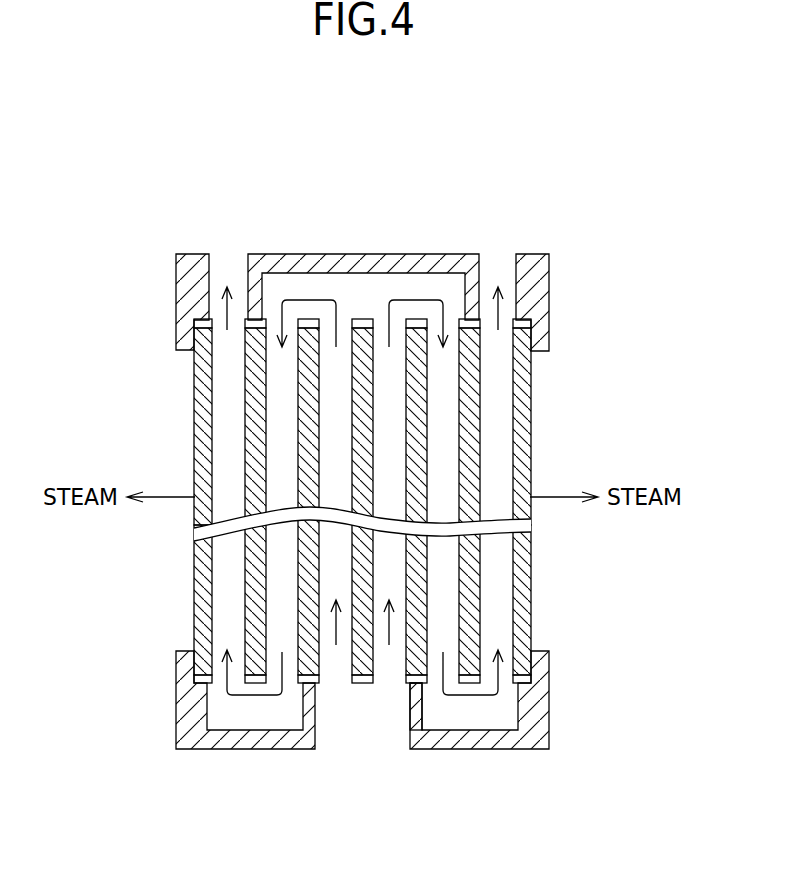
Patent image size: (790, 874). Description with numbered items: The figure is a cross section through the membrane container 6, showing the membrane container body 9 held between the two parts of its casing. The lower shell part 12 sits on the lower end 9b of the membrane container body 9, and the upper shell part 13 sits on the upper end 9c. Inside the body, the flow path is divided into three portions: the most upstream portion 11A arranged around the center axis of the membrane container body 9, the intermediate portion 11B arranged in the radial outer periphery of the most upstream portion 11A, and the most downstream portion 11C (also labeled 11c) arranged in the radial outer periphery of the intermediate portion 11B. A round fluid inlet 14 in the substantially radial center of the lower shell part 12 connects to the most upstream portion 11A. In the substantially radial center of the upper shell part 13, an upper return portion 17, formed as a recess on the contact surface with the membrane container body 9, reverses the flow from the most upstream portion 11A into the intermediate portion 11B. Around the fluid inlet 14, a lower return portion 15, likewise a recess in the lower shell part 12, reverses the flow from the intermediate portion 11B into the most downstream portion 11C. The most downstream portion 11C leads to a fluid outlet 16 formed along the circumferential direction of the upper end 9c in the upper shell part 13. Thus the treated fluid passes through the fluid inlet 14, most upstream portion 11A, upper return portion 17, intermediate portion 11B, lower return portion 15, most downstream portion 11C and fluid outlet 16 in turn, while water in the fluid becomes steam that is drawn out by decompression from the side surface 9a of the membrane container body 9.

The membrane container 6 is at (142, 266).
The membrane container body 9 is at (547, 460).
The side surface 9a is at (531, 578).
The lower end 9b is at (527, 681).
The upper end 9c is at (521, 320).
The most upstream portion 11A is at (402, 663).
The intermediate portion 11B is at (270, 392).
The most downstream portion 11C is at (515, 352).
The most downstream portion 11c is at (193, 363).
The lower shell part 12 is at (546, 723).
The upper shell part 13 is at (540, 267).
The fluid inlet 14 is at (407, 733).
The lower return portion 15 is at (258, 730).
The fluid outlet 16 is at (243, 270).
The upper return portion 17 is at (352, 273).